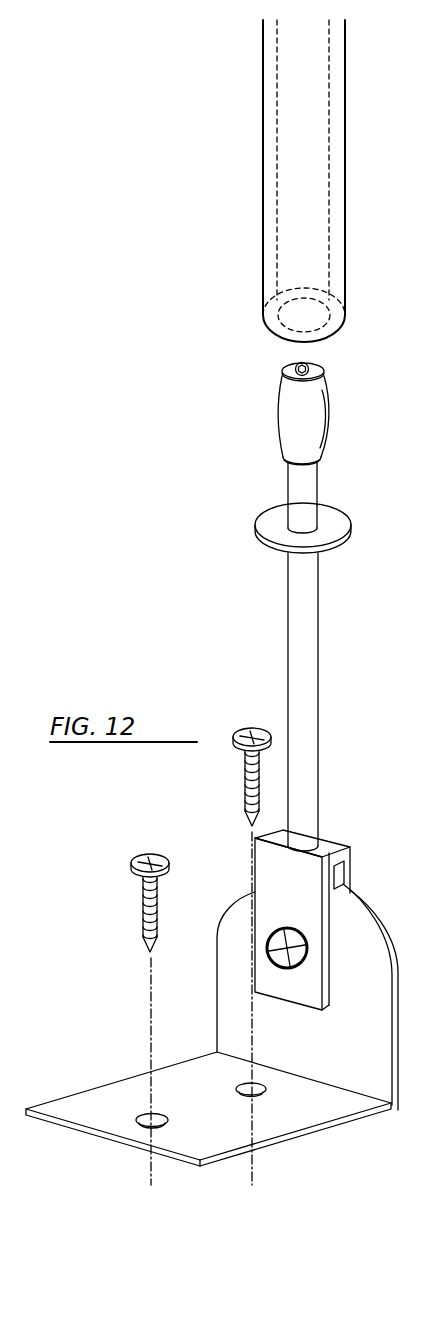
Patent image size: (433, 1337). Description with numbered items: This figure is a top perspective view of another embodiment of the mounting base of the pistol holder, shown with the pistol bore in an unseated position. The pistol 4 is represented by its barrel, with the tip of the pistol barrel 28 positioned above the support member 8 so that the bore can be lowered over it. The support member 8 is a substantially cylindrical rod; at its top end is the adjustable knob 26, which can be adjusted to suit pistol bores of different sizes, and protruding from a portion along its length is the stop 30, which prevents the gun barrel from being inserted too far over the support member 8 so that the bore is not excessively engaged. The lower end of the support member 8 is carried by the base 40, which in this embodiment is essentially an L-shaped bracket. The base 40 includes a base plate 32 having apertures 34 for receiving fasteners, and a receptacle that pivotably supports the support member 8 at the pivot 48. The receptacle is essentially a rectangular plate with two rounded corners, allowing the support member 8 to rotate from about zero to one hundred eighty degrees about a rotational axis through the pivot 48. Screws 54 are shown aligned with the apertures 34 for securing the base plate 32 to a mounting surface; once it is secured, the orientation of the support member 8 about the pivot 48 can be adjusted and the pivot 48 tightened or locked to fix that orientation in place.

The pistol 4 is at (263, 197).
The tip of pistol barrel 28 is at (250, 289).
The adjustable knob 26 is at (290, 412).
The stop 30 is at (256, 526).
The support member 8 is at (289, 683).
The screws 54 is at (243, 803).
The base 40 is at (233, 990).
The pivot 48 is at (267, 946).
The base plate 32 is at (127, 1088).
The aperture 34 is at (138, 1120).